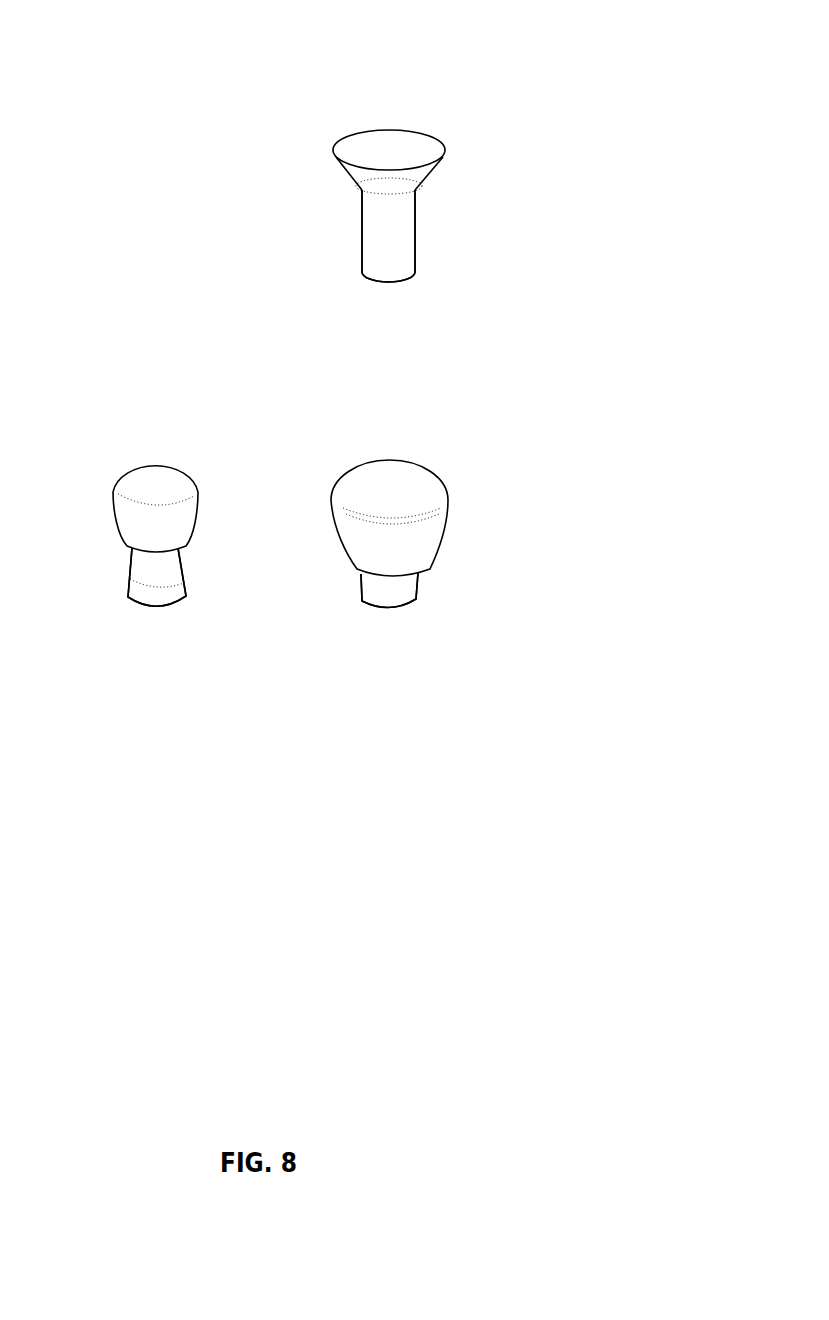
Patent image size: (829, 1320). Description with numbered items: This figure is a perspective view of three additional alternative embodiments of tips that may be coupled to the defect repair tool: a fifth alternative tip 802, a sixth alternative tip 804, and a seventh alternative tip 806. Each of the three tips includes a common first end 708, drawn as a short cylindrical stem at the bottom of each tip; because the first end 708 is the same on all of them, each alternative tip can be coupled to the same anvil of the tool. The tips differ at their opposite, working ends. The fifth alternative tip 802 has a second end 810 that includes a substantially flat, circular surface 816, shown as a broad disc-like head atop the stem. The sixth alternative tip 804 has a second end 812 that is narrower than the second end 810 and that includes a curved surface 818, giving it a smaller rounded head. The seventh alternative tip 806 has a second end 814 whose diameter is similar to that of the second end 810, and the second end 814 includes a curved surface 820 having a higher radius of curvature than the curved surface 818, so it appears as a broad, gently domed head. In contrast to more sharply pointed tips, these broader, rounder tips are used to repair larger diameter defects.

The fifth alternative tip 802 is at (402, 80).
The sixth alternative tip 804 is at (188, 423).
The seventh alternative tip 806 is at (400, 422).
The first end 708 is at (416, 270).
The second end 810 is at (428, 148).
The second end 812 is at (128, 468).
The second end 814 is at (442, 482).
The substantially flat, circular surface 816 is at (380, 155).
The curved surface 818 is at (192, 486).
The curved surface 820 is at (357, 482).